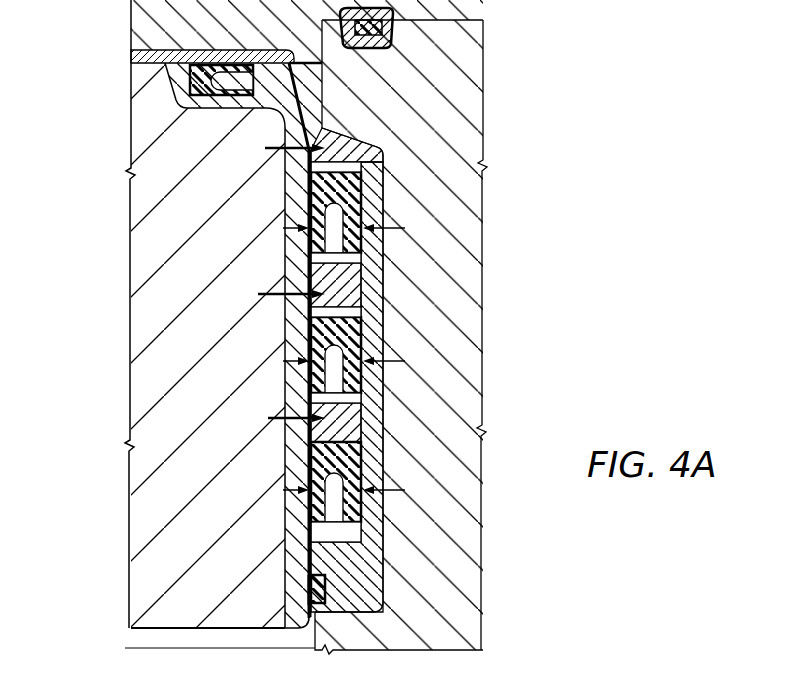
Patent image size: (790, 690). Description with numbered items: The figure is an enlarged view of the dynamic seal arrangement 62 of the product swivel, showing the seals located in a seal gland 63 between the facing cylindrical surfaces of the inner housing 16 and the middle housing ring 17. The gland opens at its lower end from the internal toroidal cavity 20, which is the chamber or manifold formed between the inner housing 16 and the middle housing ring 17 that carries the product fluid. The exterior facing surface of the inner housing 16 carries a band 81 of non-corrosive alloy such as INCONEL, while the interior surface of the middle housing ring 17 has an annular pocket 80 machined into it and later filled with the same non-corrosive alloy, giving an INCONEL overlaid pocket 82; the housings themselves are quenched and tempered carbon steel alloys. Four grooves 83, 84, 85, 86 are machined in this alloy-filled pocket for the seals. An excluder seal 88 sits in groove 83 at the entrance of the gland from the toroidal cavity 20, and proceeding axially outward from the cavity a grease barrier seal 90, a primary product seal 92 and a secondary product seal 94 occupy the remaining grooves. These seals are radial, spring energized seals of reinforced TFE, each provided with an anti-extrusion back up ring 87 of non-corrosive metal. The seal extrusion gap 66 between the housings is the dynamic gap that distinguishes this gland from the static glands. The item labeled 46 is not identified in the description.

The inner housing 16 is at (145, 137).
The middle housing ring 17 is at (460, 108).
The internal toroidal cavity 20 is at (213, 639).
The retainer ring 46 is at (142, 27).
The dynamic seal arrangement 62 is at (255, 278).
The seal gland 63 is at (283, 228).
The seal extrusion gap 66 is at (265, 148).
The annular pocket 80 is at (382, 312).
The band of non-corrosive alloy 81 is at (284, 535).
The INCONEL overlaid pocket 82 is at (360, 285).
The seal groove 83 is at (328, 592).
The seal groove 84 is at (360, 510).
The seal groove 85 is at (375, 383).
The seal groove 86 is at (384, 164).
The anti-extrusion back up ring 87 is at (380, 150).
The excluder seal 88 is at (304, 586).
The grease barrier seal 90 is at (295, 446).
The primary product seal 92 is at (313, 331).
The secondary product seal 94 is at (318, 186).